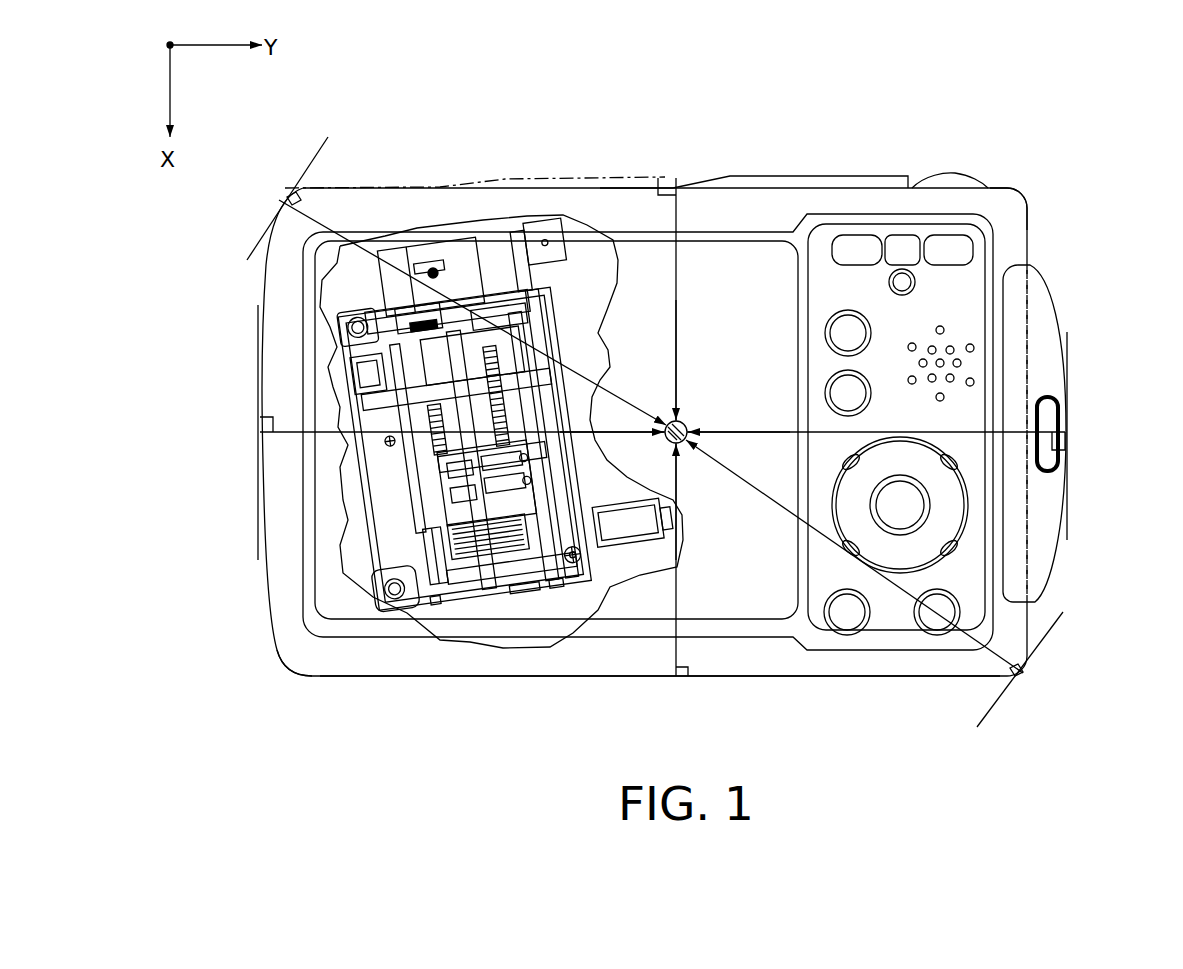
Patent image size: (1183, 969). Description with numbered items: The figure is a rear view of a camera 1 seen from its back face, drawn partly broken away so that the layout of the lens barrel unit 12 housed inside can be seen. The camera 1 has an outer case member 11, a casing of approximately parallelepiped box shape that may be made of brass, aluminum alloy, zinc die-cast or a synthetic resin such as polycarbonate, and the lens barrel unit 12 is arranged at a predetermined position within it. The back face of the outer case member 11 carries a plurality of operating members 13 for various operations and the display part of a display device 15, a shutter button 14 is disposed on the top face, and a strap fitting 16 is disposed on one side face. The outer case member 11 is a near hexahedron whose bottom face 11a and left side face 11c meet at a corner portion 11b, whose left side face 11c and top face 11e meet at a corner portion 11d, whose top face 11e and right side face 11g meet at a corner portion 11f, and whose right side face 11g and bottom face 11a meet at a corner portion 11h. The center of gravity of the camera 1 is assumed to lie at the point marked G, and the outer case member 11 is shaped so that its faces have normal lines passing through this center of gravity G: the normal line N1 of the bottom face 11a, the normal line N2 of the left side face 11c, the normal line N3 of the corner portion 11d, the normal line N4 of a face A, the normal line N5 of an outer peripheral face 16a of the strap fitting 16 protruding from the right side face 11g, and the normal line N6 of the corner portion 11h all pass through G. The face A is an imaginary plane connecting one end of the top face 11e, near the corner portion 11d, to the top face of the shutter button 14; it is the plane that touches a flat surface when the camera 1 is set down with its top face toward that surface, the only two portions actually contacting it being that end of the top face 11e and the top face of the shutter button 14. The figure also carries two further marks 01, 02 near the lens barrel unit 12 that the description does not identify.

The camera 1 is at (985, 128).
The outer case member 11 is at (623, 205).
The bottom face 11a is at (511, 683).
The corner portion 11b is at (288, 674).
The left side face 11c is at (257, 443).
The corner portion 11d is at (277, 203).
The top face 11e is at (592, 178).
The corner portion 11f is at (1033, 192).
The right side face 11g is at (1033, 334).
The corner portion 11h is at (1030, 670).
The lens barrel unit 12 is at (458, 248).
The operating members 13 is at (848, 385).
The shutter button 14 is at (853, 190).
The display device 15 is at (763, 272).
The strap fitting 16 is at (1048, 560).
The outer peripheral face 16a is at (1070, 437).
The optical axis point 01 is at (433, 268).
The lens barrel block 02 is at (442, 305).
The face A is at (648, 178).
The center of gravity G is at (690, 422).
The normal line N1 is at (678, 494).
The normal line N2 is at (652, 437).
The normal line N3 is at (663, 398).
The normal line N4 is at (678, 316).
The normal line N5 is at (763, 424).
The normal line N6 is at (755, 495).